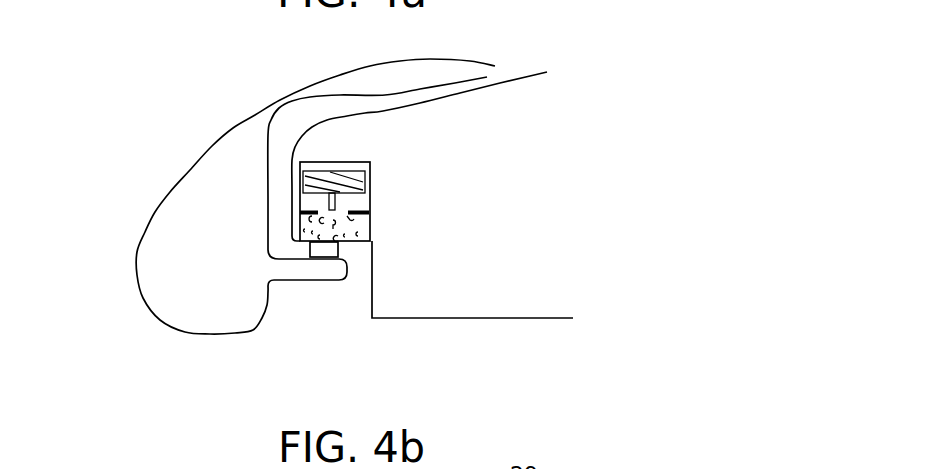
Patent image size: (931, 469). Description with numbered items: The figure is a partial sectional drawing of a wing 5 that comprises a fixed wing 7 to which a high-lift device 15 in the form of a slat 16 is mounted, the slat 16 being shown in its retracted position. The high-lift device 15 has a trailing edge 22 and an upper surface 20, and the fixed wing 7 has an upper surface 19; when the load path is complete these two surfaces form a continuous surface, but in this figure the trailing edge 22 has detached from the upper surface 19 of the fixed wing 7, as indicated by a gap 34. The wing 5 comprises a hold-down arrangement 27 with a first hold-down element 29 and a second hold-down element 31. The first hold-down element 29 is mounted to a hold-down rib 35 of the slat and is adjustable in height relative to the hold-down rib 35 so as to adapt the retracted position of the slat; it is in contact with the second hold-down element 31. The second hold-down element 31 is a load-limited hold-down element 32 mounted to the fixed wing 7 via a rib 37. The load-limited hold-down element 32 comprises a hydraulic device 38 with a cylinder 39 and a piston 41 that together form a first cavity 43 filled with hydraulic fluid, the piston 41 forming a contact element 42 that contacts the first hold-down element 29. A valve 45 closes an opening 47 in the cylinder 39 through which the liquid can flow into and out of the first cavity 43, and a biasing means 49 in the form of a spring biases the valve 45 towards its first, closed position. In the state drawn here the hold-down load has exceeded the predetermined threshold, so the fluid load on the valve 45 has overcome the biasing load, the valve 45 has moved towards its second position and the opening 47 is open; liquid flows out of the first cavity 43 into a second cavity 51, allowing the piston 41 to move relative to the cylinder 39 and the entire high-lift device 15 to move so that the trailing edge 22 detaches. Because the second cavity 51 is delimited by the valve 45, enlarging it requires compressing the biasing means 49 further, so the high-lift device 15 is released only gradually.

The wing 5 is at (88, 73).
The fixed wing 7 is at (553, 148).
The high-lift device 15 is at (186, 248).
The slat 16 is at (221, 302).
The upper surface of the fixed wing 19 is at (543, 72).
The upper surface of the high-lift device 20 is at (233, 128).
The trailing edge 22 is at (448, 59).
The hold-down arrangement 27 is at (417, 212).
The first hold-down element 29 is at (322, 248).
The second hold-down element 31 is at (468, 268).
The load-limited hold-down element 32 is at (468, 268).
The gap 34 is at (487, 77).
The hold-down rib 35 is at (337, 272).
The rib 37 is at (340, 162).
The hydraulic device 38 is at (413, 260).
The cylinder 39 is at (369, 231).
The piston 41 is at (236, 305).
The contact element 42 is at (305, 243).
The first cavity 43 is at (302, 233).
The valve 45 is at (348, 210).
The opening 47 is at (341, 225).
The biasing means 49 is at (330, 210).
The second cavity 51 is at (318, 212).